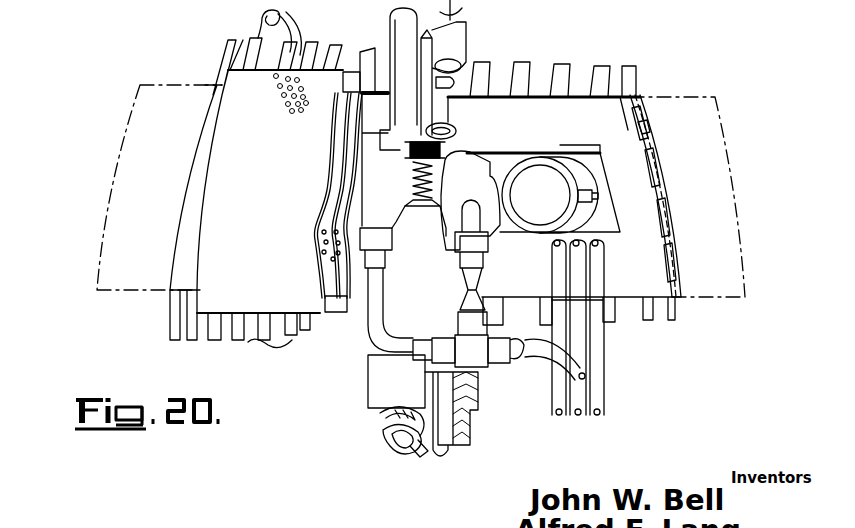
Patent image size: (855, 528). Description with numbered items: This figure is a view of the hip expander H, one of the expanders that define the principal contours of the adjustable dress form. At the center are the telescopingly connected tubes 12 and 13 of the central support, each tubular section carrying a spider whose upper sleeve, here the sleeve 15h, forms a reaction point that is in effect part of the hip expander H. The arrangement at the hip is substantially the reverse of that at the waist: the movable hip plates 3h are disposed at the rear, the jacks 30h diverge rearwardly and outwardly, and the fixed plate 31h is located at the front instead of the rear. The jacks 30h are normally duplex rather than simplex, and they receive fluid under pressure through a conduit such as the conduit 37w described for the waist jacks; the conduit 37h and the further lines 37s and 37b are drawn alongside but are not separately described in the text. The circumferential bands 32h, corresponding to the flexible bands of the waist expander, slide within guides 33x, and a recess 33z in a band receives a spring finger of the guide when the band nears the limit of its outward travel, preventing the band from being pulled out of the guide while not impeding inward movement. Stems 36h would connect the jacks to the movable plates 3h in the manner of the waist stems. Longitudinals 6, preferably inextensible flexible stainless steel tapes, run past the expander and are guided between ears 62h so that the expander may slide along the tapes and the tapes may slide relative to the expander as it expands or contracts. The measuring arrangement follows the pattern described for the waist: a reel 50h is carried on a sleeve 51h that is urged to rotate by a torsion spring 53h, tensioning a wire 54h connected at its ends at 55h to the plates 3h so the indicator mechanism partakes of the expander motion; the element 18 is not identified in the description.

The hip expander H is at (675, 275).
The hip plates 3h is at (670, 190).
The longitudinals 6 is at (269, 188).
The tube 12 is at (448, 42).
The tube 13 is at (382, 420).
The sleeve 15h is at (378, 388).
The threaded plug 18 is at (425, 455).
The jacks 30h is at (513, 190).
The fixed plate 31h is at (292, 189).
The wall 32h is at (185, 195).
The guides 33x is at (368, 290).
The recess 33z is at (398, 0).
The stub 36h is at (585, 192).
The hose 37h is at (588, 376).
The conduit 37w is at (556, 415).
The pipe 37s is at (578, 418).
The pipe 37b is at (598, 398).
The ring 50h is at (456, 127).
The ring 51h is at (436, 86).
The spring nut 53h is at (415, 200).
The cylinder 54h is at (540, 160).
The plate 55h is at (572, 152).
The lug 62h is at (650, 118).